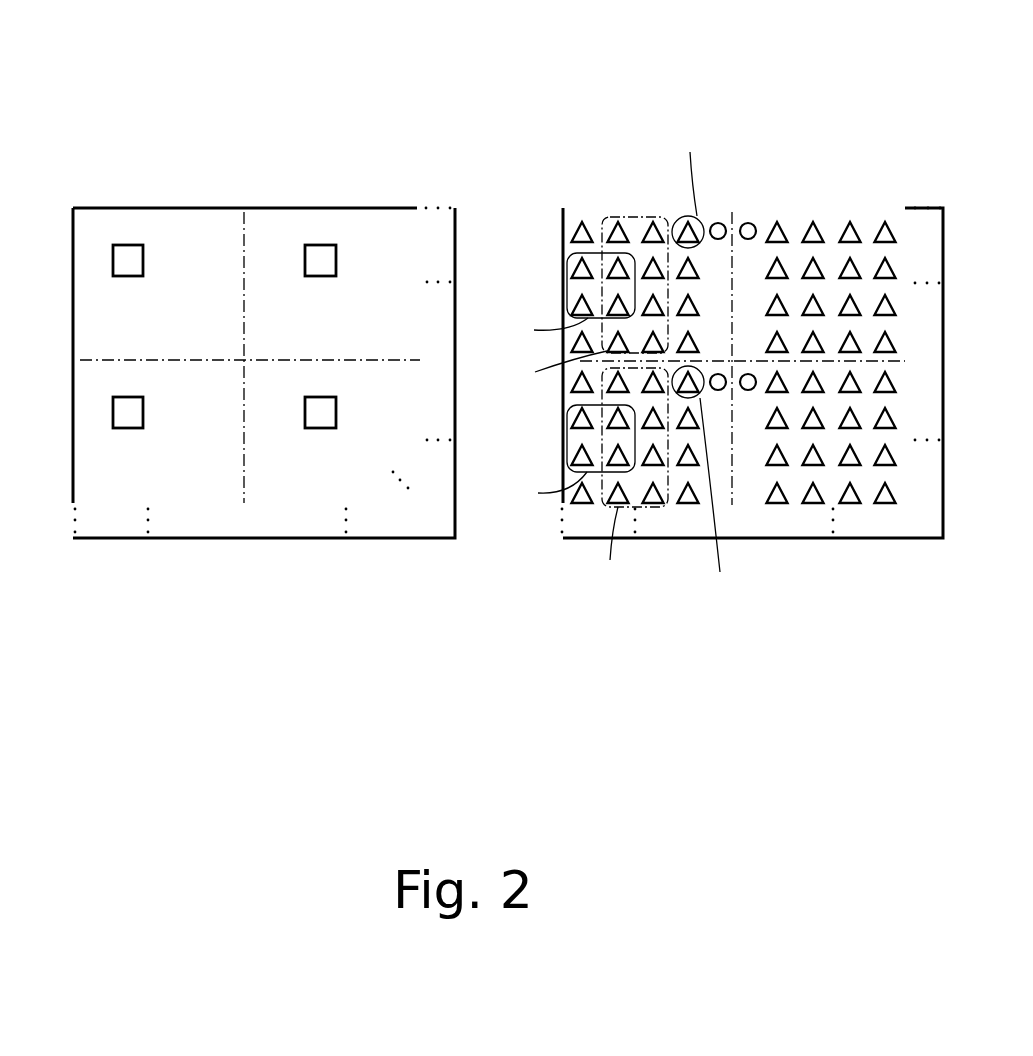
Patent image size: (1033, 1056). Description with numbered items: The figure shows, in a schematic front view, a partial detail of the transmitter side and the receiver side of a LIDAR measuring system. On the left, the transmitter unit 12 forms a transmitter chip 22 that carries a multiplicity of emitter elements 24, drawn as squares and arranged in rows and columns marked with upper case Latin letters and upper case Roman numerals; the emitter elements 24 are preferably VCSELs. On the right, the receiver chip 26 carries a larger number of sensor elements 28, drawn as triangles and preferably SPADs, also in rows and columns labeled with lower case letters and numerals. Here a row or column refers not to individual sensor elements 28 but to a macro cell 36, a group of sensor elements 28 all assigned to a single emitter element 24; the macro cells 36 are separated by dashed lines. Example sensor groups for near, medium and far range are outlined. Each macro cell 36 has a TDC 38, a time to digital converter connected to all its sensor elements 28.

The transmitter unit 12 is at (80, 156).
The transmitter chip 22 is at (120, 207).
The emitter element 24 is at (143, 260).
The receiver chip 26 is at (563, 190).
The sensor element 28 is at (893, 466).
The macro cell 36 is at (598, 222).
The TDC 38 is at (718, 222).